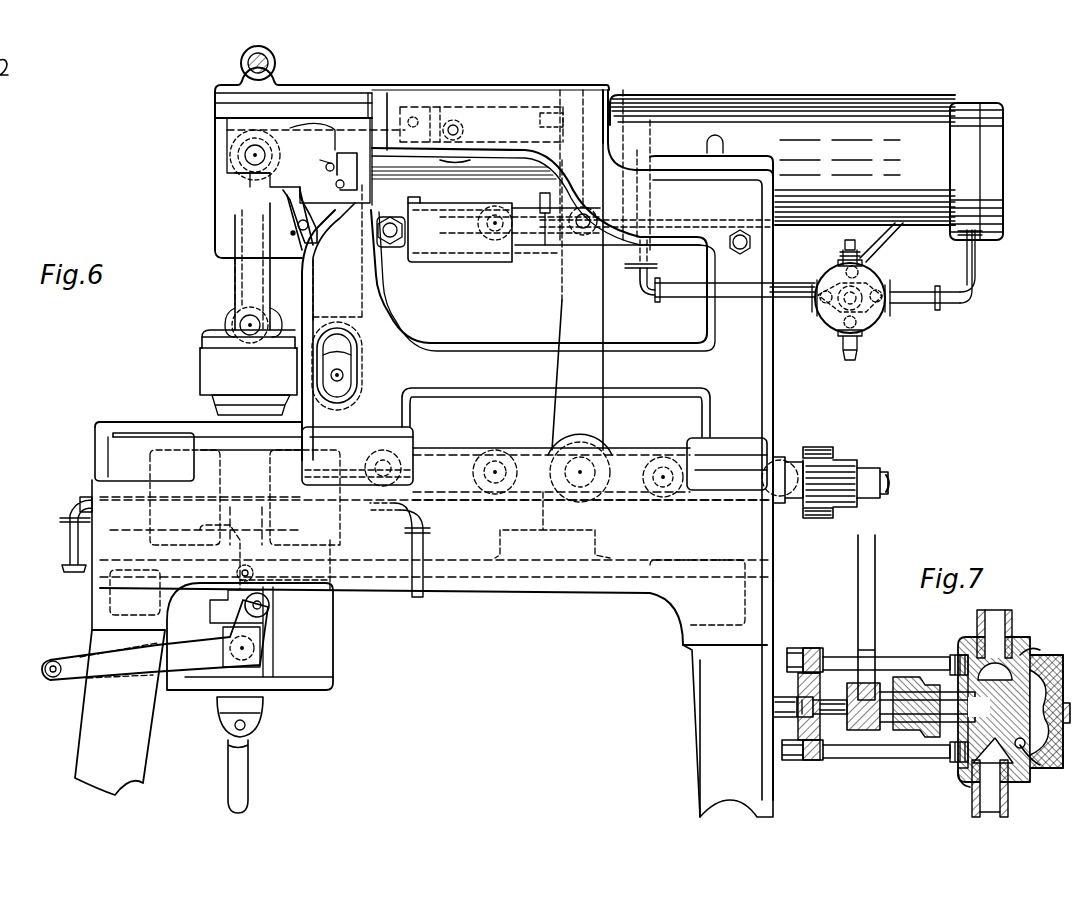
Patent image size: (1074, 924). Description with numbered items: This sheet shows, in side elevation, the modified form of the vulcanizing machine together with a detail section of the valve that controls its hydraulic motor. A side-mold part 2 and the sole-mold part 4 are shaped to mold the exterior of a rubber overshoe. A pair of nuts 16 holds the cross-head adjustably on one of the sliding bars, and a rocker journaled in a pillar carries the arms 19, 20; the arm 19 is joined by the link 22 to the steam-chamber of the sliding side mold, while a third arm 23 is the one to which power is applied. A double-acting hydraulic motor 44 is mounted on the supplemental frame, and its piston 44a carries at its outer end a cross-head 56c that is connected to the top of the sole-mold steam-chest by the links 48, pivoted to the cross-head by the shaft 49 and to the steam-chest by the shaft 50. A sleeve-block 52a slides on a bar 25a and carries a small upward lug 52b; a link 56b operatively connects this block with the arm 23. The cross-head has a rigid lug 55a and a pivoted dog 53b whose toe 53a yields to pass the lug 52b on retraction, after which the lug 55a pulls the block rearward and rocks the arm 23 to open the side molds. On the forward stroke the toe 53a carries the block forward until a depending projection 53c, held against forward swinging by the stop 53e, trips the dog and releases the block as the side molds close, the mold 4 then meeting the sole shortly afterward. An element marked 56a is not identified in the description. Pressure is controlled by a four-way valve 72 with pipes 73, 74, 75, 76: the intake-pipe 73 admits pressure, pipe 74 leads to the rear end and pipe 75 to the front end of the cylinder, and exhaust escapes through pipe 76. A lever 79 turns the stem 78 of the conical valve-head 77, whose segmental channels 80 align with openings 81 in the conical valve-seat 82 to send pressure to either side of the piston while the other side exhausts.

In FIG. 6, the side-mold part 2 is at (160, 420).
In FIG. 6, the sole-mold part 4 is at (248, 372).
In FIG. 6, the pair of nuts 16 is at (785, 468).
In FIG. 6, the rocker arm 19 is at (525, 487).
In FIG. 6, the rocker arm 20 is at (633, 460).
In FIG. 6, the link 22 is at (441, 472).
In FIG. 6, the third arm of the rocker 23 is at (605, 305).
In FIG. 6, the bar 25a is at (545, 262).
In FIG. 6, the double-acting hydraulic motor 44 is at (806, 167).
In FIG. 6, the piston of the hydraulic motor 44a is at (490, 200).
In FIG. 6, the links 48 is at (245, 233).
In FIG. 6, the shaft 49 is at (230, 155).
In FIG. 6, the shaft 50 is at (240, 325).
In FIG. 6, the sleeve-block 52a is at (462, 262).
In FIG. 6, the lug 52b is at (415, 201).
In FIG. 6, the toe of the dog 53a is at (315, 237).
In FIG. 6, the pivoted dog 53b is at (347, 152).
In FIG. 6, the projection 53c is at (455, 158).
In FIG. 6, the stop 53e is at (435, 112).
In FIG. 6, the rigid lug 55a is at (248, 205).
In FIG. 6, the spring 56a is at (309, 135).
In FIG. 6, the link 56b is at (522, 210).
In FIG. 6, the cross-head 56c is at (314, 159).
In FIG. 6, the four-way valve 72 is at (874, 325).
In FIG. 7, the four-way valve 72 is at (999, 713).
In FIG. 6, the intake-pipe 73 is at (843, 250).
In FIG. 7, the intake-pipe 73 is at (998, 615).
In FIG. 6, the connecting-pipe 74 is at (962, 304).
In FIG. 6, the connecting-pipe 75 is at (782, 298).
In FIG. 6, the exhaust-pipe 76 is at (856, 356).
In FIG. 7, the exhaust-pipe 76 is at (1005, 810).
In FIG. 7, the conical valve-head 77 is at (1030, 668).
In FIG. 7, the stem 78 is at (887, 725).
In FIG. 6, the lever 79 is at (890, 242).
In FIG. 7, the lever 79 is at (858, 612).
In FIG. 7, the segmental channels 80 is at (1030, 765).
In FIG. 7, the openings 81 is at (1025, 655).
In FIG. 7, the conical valve-seat 82 is at (955, 785).